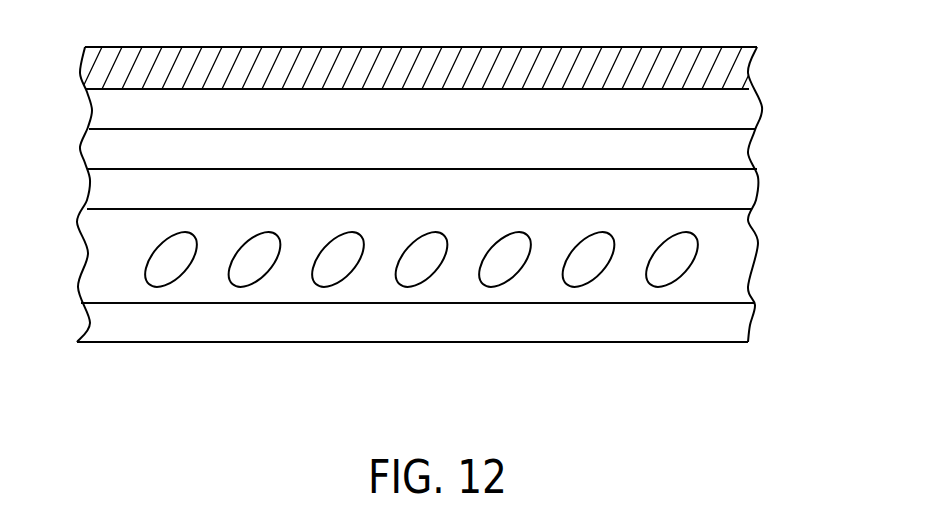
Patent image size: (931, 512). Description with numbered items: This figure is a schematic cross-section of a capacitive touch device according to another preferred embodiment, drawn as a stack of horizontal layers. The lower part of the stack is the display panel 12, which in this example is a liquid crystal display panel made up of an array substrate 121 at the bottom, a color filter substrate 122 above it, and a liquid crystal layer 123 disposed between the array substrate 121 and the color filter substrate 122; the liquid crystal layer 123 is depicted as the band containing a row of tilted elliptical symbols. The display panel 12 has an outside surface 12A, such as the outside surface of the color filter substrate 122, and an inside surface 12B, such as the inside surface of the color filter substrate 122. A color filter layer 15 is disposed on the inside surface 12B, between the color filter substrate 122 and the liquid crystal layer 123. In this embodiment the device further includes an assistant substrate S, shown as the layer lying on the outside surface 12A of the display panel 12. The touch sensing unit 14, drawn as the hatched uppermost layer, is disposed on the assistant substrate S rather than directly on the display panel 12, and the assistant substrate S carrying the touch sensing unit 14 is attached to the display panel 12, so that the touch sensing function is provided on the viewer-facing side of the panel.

The display panel 12 is at (817, 335).
The touch sensing unit 14 is at (439, 79).
The assistant substrate S is at (434, 120).
The outside surface 12A is at (106, 129).
The color filter substrate 122 is at (740, 152).
The inside surface 12B is at (106, 170).
The color filter layer 15 is at (439, 199).
The liquid crystal layer 123 is at (750, 249).
The array substrate 121 is at (750, 320).